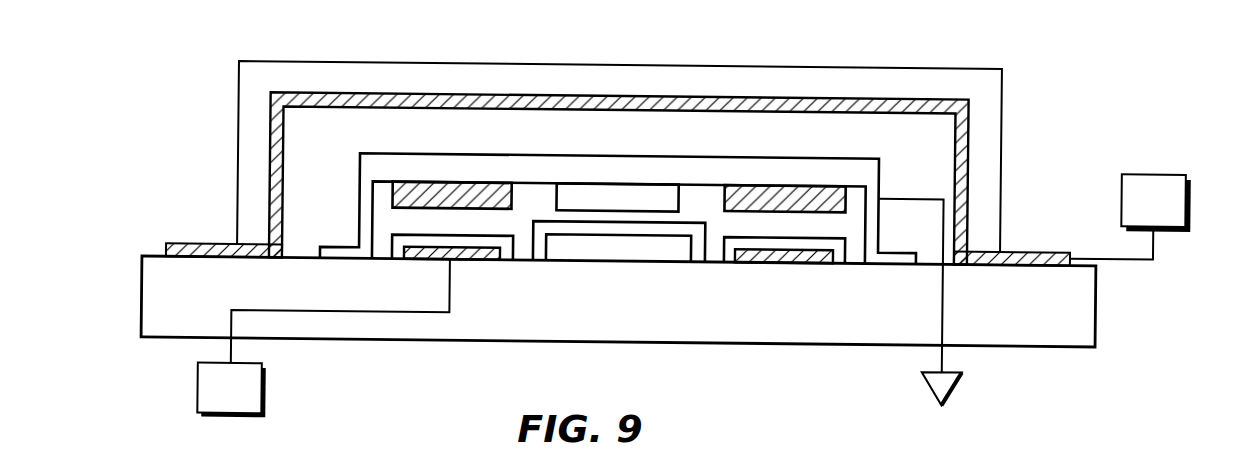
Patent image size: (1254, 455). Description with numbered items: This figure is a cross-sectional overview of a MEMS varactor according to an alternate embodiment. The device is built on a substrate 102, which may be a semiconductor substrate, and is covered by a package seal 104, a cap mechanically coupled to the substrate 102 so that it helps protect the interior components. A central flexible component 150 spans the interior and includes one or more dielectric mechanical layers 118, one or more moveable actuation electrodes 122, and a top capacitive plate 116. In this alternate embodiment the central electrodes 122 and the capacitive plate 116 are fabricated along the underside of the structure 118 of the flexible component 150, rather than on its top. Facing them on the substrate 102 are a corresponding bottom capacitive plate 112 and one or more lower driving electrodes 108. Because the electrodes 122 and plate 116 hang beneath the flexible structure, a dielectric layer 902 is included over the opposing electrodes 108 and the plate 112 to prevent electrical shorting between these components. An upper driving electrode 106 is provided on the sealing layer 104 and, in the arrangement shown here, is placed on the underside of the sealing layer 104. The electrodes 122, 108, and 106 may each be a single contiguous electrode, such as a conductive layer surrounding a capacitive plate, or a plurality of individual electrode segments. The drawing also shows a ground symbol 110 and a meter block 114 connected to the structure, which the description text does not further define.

The substrate 102 is at (680, 323).
The package seal 104 is at (753, 76).
The upper driving electrode 106 is at (585, 101).
The lower driving electrode 108 is at (491, 250).
The ground 110 is at (962, 378).
The bottom capacitive plate 112 is at (618, 246).
The voltage meter 114 is at (1160, 162).
The top capacitive plate 116 is at (627, 186).
The dielectric mechanical layer 118 is at (702, 157).
The moveable actuation electrode 122 is at (483, 187).
The central flexible component 150 is at (348, 178).
The dielectric layer 902 is at (399, 251).